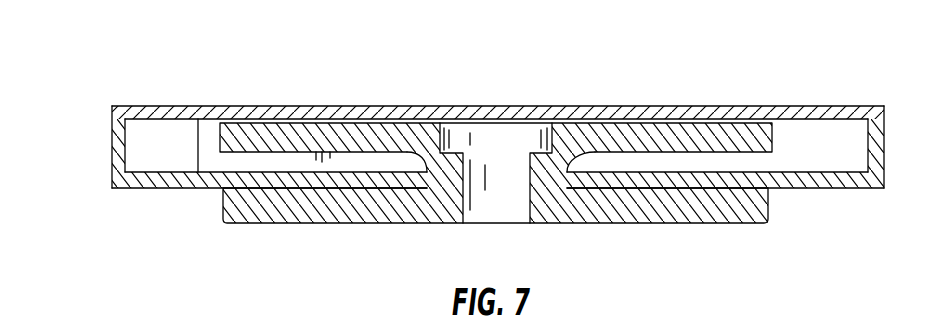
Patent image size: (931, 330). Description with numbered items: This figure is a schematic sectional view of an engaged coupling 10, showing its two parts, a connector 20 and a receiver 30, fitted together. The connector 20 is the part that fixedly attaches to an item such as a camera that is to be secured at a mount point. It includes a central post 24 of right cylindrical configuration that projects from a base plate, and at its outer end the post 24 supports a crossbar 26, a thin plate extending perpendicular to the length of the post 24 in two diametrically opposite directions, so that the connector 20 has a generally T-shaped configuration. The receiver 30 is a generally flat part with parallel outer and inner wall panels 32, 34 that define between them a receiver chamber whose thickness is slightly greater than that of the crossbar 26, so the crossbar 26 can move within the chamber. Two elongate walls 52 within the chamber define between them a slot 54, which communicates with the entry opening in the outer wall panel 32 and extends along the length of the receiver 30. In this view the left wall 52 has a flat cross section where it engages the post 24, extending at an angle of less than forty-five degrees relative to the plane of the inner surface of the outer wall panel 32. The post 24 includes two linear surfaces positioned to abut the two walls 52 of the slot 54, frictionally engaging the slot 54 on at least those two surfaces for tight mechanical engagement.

The coupling 10 is at (448, 146).
The connector 20 is at (226, 224).
The central post 24 is at (469, 163).
The crossbar 26 is at (247, 133).
The receiver 30 is at (448, 138).
The outer wall panel 32 is at (108, 163).
The inner wall panel 34 is at (196, 107).
The elongate walls 52 is at (426, 175).
The slot 54 is at (427, 173).